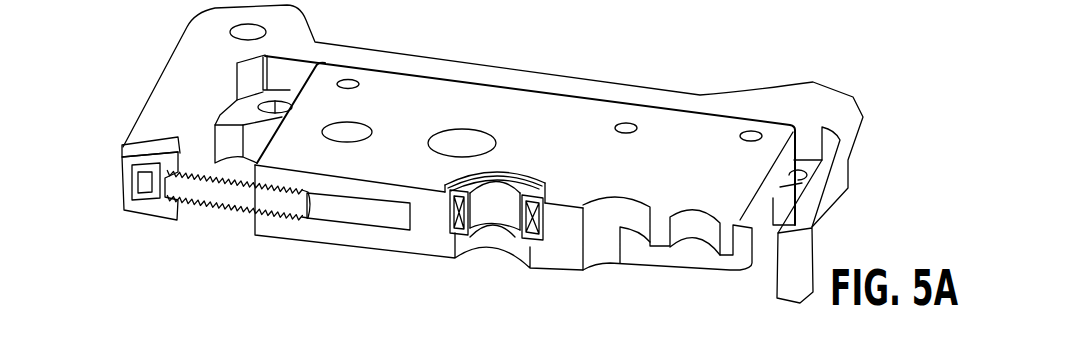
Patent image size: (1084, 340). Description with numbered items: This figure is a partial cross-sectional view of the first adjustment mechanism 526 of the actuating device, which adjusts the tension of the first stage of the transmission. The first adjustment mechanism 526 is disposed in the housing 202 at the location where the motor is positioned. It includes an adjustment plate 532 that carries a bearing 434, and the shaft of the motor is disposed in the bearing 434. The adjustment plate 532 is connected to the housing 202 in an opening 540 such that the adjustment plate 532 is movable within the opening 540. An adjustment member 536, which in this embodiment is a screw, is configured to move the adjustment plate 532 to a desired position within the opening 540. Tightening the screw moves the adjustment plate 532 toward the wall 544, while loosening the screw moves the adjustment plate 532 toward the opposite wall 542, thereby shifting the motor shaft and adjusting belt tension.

The first adjustment mechanism 526 is at (163, 42).
The housing 202 is at (182, 96).
The wall 544 is at (230, 120).
The opening 540 is at (252, 108).
The adjustment plate 532 is at (672, 128).
The wall 542 is at (798, 198).
The adjustment member 536 is at (218, 194).
The bearing 434 is at (458, 210).